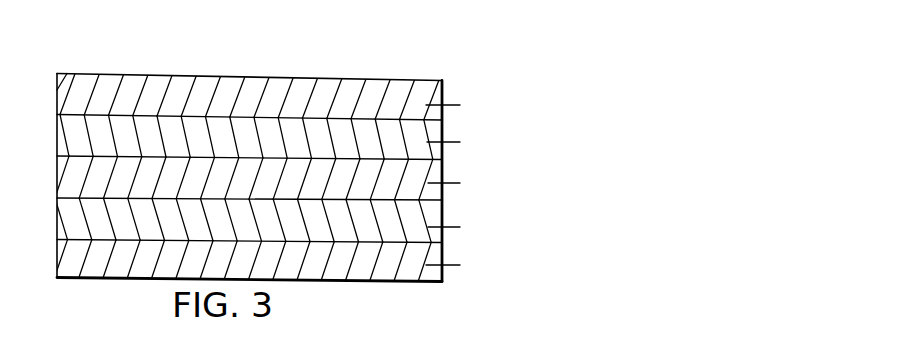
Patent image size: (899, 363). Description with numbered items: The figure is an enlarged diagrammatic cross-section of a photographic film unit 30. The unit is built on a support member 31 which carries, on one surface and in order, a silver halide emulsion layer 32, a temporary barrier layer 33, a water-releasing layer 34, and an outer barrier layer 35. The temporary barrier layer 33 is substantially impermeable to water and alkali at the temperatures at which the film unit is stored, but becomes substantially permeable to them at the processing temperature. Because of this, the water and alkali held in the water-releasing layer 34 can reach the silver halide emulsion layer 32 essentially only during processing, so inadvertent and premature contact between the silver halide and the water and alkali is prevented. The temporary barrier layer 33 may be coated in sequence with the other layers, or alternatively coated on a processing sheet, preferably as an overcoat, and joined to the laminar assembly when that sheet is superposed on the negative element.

The film unit 30 is at (112, 75).
The support member 31 is at (68, 260).
The silver halide emulsion layer 32 is at (68, 220).
The temporary barrier layer 33 is at (68, 177).
The water-releasing layer 34 is at (68, 137).
The barrier layer 35 is at (68, 96).